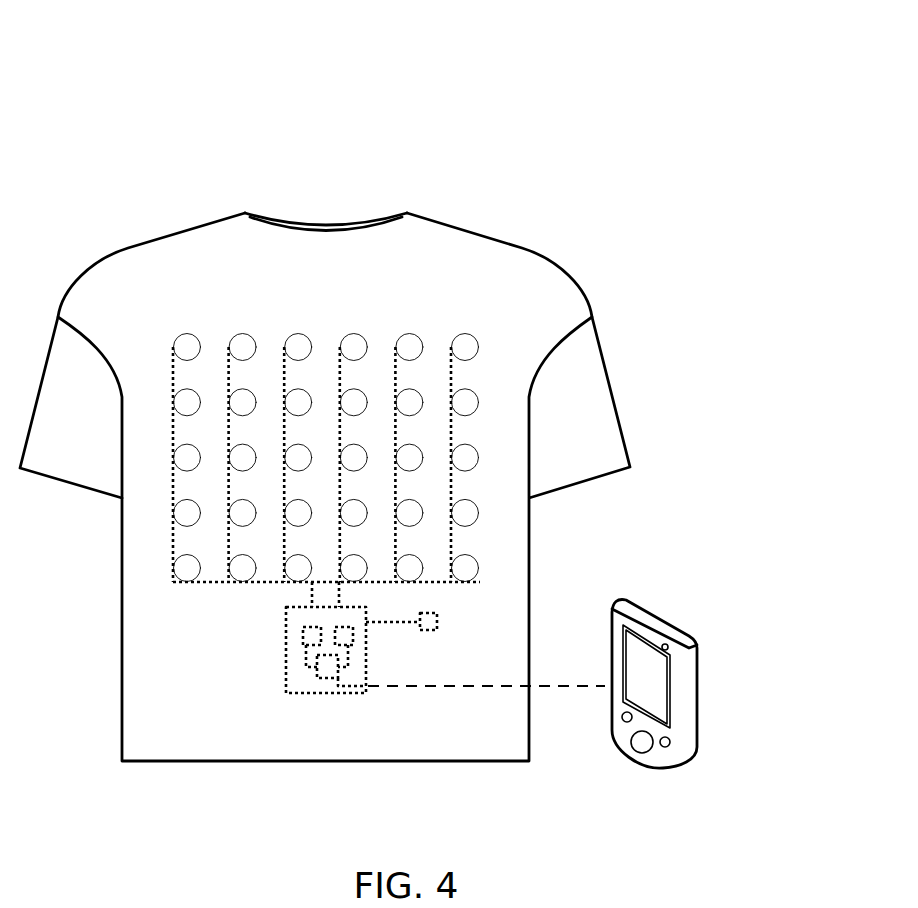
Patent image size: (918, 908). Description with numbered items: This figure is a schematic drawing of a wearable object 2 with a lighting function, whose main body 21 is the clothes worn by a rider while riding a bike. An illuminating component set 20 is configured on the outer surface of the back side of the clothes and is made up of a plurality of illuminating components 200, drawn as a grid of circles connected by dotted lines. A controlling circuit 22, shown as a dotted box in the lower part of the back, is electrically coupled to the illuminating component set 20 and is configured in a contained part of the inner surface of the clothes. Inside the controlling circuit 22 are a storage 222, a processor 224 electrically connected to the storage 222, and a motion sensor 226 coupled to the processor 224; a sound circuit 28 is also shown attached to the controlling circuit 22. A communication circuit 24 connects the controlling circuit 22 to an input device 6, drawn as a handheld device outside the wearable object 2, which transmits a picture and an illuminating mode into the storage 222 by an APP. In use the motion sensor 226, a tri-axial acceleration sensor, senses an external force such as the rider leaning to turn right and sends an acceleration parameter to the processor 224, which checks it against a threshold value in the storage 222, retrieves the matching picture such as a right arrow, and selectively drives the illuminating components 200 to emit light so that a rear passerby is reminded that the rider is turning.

The wearable object 2 is at (336, 166).
The illuminating component set 20 is at (504, 318).
The main body 21 is at (192, 228).
The illuminating component 200 is at (245, 337).
The controlling circuit 22 is at (286, 677).
The storage 222 is at (303, 630).
The processor 224 is at (326, 678).
The motion sensor 226 is at (352, 638).
The communication circuit 24 is at (352, 690).
The sound circuit 28 is at (437, 622).
The input device 6 is at (698, 673).